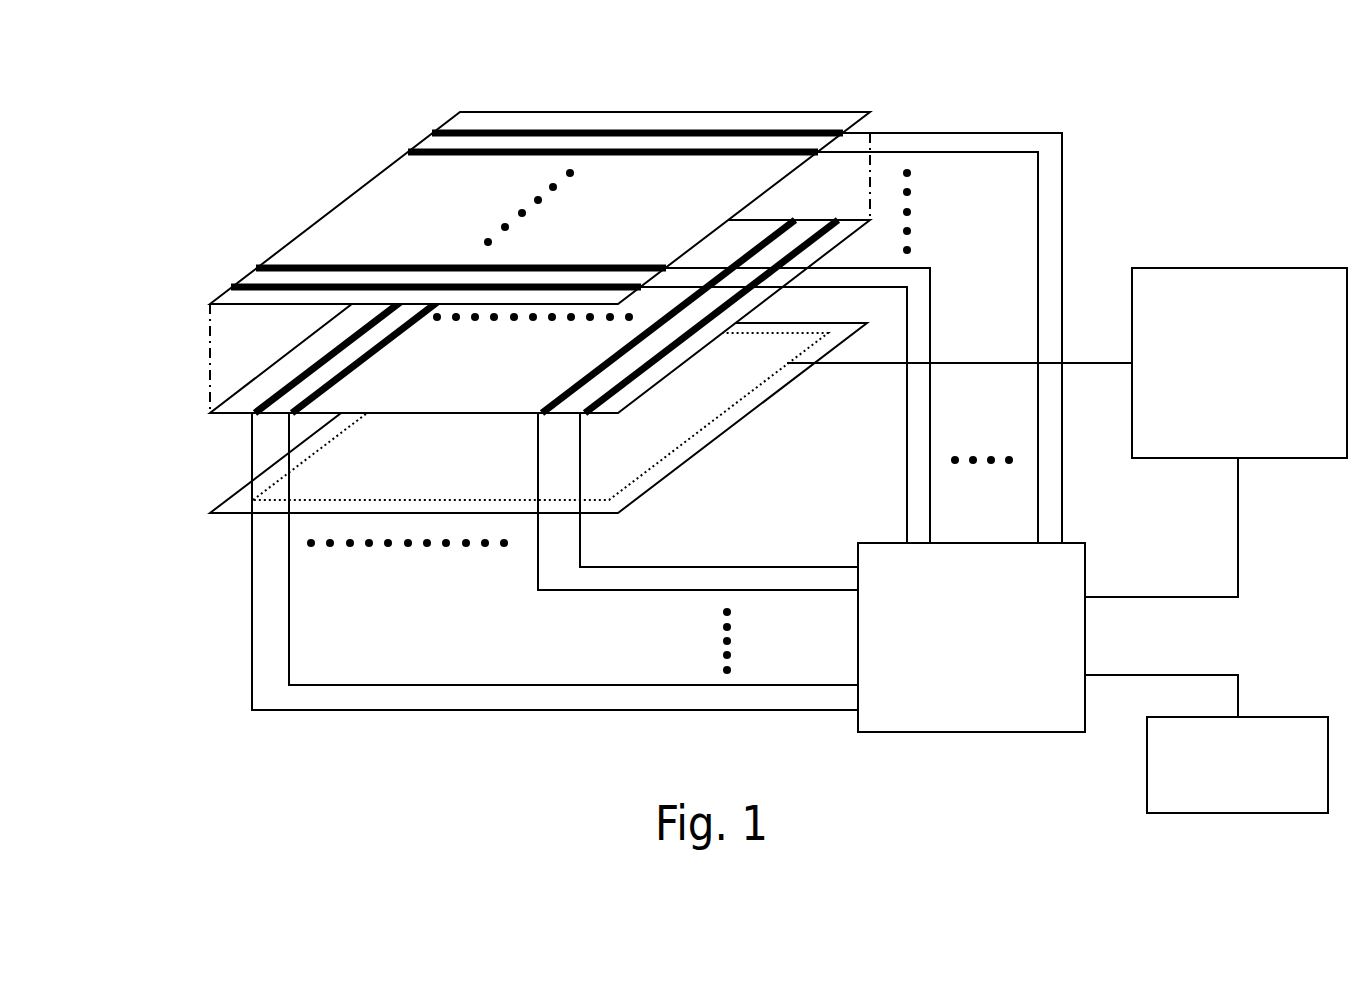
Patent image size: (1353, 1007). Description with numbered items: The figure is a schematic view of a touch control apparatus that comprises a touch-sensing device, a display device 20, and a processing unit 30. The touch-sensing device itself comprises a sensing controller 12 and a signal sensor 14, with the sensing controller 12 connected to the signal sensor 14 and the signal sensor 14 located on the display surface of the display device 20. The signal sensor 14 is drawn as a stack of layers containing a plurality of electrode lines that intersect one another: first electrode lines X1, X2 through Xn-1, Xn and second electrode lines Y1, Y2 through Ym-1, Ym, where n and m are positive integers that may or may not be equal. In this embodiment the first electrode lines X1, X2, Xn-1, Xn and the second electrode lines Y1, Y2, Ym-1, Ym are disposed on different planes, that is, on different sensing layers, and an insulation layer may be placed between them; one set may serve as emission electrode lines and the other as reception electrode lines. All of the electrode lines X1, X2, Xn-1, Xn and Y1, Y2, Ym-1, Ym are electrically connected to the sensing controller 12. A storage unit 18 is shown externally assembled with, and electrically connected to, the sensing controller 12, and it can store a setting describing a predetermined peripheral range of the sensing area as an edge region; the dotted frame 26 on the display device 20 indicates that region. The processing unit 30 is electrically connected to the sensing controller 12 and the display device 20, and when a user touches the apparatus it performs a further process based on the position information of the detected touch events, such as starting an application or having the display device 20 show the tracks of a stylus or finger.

The sensing controller 12 is at (990, 732).
The signal sensor 14 is at (195, 298).
The storage unit 18 is at (1232, 813).
The display device 20 is at (230, 515).
The sensing region 26 is at (645, 472).
The processing unit 30 is at (1228, 268).
The first electrode line X1 is at (333, 355).
The first electrode line X2 is at (407, 328).
The first electrode line Xn-1 is at (576, 391).
The first electrode line Xn is at (652, 362).
The second electrode line Y1 is at (368, 287).
The second electrode line Y2 is at (553, 265).
The second electrode line Ym-1 is at (665, 148).
The second electrode line Ym is at (575, 130).